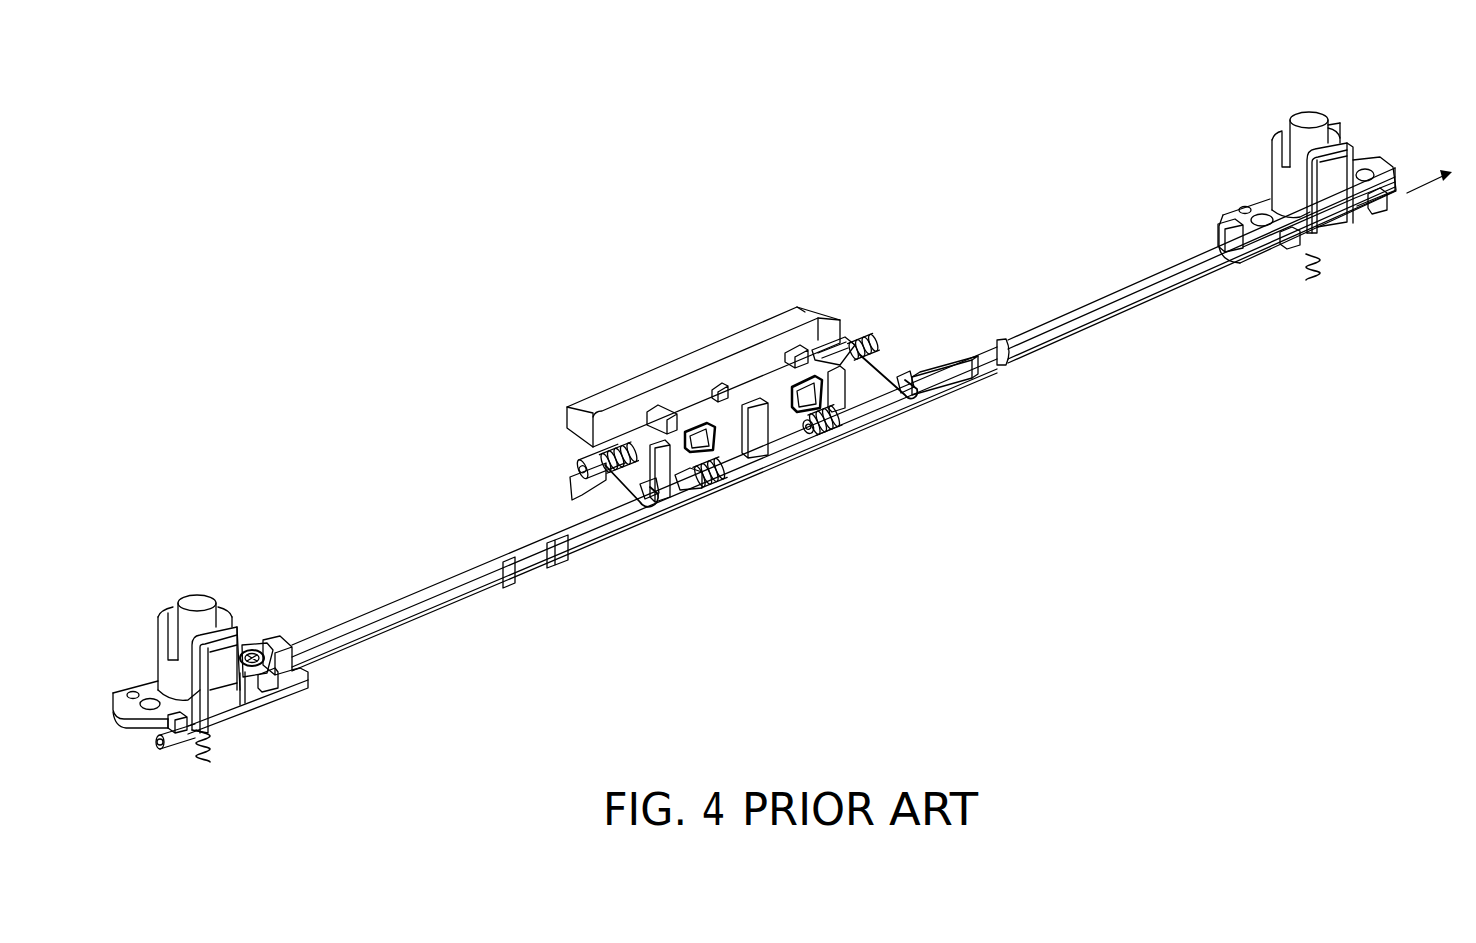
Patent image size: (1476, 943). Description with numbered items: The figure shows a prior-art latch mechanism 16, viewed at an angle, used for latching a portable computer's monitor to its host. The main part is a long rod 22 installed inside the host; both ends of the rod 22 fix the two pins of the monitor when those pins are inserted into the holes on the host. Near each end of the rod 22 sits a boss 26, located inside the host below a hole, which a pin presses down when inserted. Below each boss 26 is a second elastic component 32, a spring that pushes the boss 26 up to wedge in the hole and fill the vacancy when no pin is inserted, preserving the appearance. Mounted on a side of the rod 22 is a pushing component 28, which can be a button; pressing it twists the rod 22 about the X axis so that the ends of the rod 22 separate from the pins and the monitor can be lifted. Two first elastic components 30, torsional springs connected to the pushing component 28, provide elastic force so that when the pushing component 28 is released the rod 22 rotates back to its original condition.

The latch mechanism 16 is at (507, 228).
The rod 22 is at (938, 372).
The boss 26 is at (197, 600).
The pushing component 28 is at (698, 345).
The first elastic component 30 is at (912, 398).
The second elastic component 32 is at (212, 762).